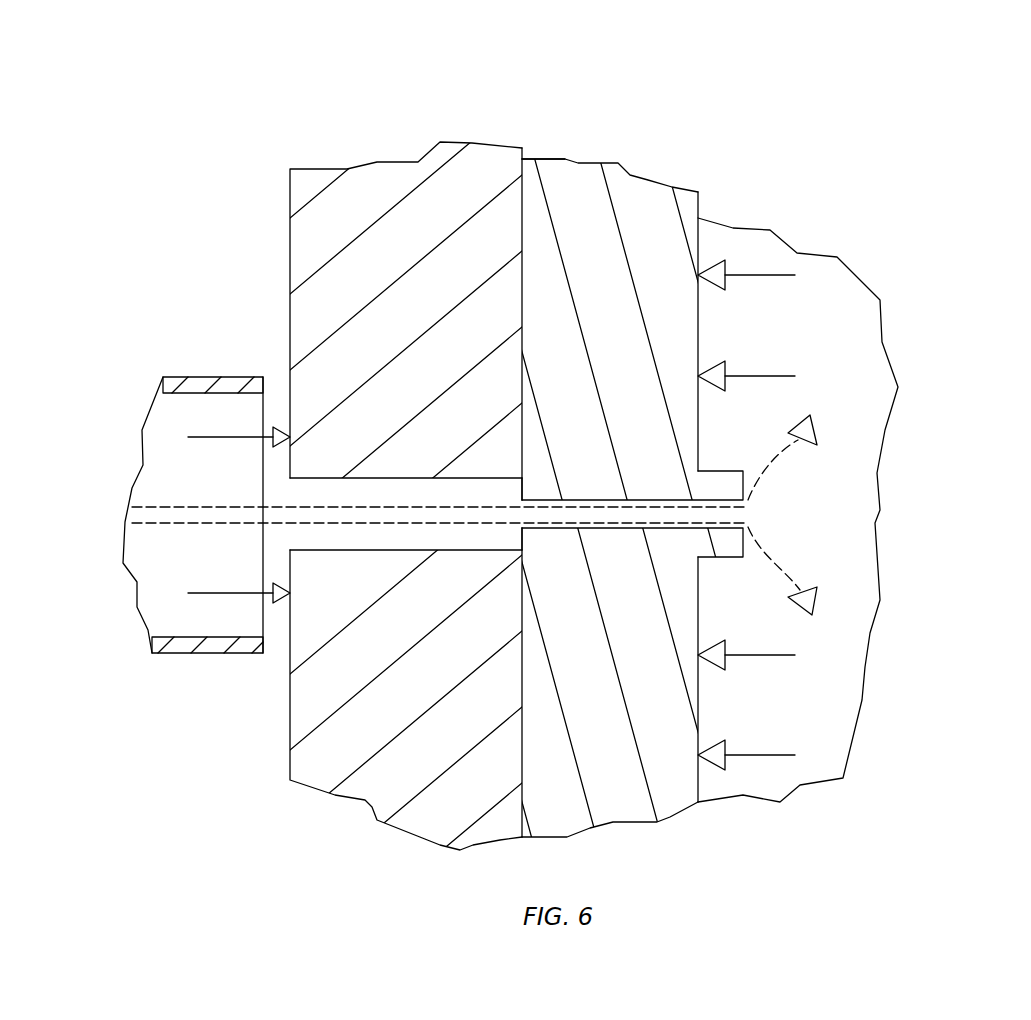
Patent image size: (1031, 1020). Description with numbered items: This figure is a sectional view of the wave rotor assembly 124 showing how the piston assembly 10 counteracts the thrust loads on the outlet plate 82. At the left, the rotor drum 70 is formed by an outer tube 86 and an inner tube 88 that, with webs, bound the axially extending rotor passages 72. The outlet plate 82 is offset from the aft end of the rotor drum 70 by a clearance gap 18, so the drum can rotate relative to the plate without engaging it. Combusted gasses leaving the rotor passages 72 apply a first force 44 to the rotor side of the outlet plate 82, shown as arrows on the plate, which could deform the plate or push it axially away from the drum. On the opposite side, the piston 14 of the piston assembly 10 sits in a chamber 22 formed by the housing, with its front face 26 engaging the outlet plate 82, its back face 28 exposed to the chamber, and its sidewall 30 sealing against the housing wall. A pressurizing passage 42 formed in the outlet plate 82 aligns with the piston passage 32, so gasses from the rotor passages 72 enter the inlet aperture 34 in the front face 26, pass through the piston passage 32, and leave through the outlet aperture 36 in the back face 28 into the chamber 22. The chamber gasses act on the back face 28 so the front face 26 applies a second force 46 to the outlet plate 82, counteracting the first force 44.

The piston assembly 10 is at (915, 192).
The piston 14 is at (573, 170).
The clearance gap 18 is at (277, 355).
The chamber 22 is at (849, 312).
The front face 26 is at (522, 222).
The back face 28 is at (700, 245).
The sidewall 30 is at (640, 203).
The piston passage 32 is at (765, 515).
The inlet aperture 34 is at (518, 515).
The outlet aperture 36 is at (758, 492).
The pressurizing passage 42 is at (320, 535).
The first force 44 is at (227, 593).
The second force 46 is at (762, 755).
The rotor drum 70 is at (180, 258).
The rotor passages 72 is at (150, 480).
The outlet plate 82 is at (372, 190).
The outer tube 86 is at (188, 377).
The inner tube 88 is at (188, 637).
The wave rotor assembly 124 is at (665, 88).